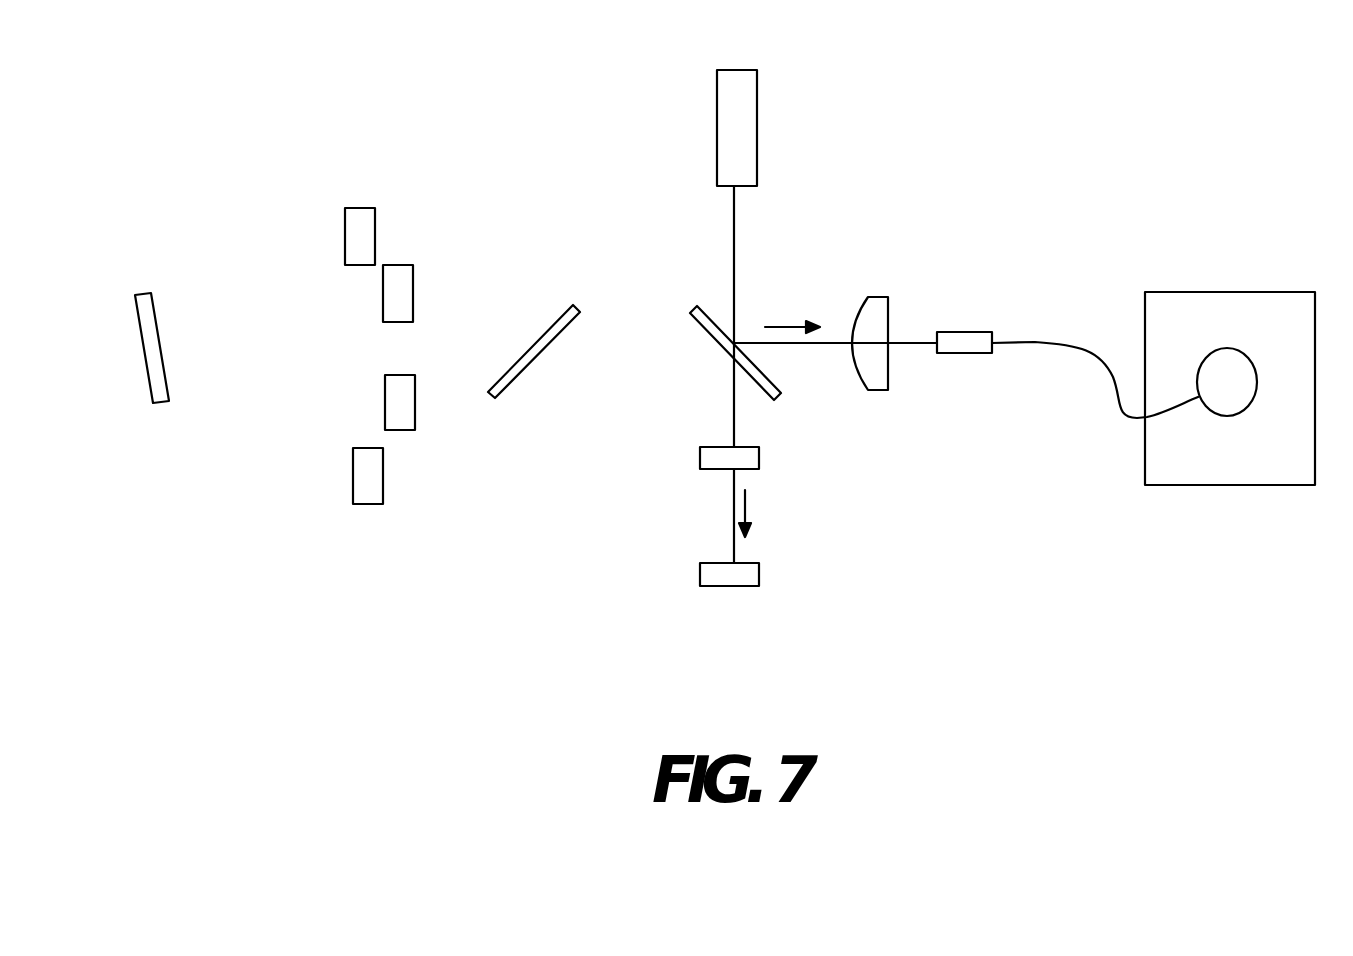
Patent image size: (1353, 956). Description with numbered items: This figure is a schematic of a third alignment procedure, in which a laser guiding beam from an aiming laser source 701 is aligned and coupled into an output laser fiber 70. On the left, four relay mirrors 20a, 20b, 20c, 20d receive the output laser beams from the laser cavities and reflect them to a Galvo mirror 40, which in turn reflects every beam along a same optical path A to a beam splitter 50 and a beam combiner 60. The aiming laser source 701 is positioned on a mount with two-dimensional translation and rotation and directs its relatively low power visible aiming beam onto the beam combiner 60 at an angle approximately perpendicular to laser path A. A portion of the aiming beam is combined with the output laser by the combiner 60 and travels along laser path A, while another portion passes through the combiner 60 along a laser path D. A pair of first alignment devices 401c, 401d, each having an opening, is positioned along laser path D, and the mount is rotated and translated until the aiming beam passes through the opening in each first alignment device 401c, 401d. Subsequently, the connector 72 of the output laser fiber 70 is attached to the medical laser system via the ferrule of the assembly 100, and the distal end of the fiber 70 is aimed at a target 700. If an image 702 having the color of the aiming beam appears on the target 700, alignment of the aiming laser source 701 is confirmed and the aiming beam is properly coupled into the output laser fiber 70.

The Galvo mirror 40 is at (160, 402).
The relay mirror 20a is at (362, 215).
The relay mirror 20b is at (398, 275).
The relay mirror 20c is at (407, 425).
The relay mirror 20d is at (365, 498).
The beam splitter 50 is at (528, 345).
The beam combiner 60 is at (705, 333).
The aiming laser source 701 is at (717, 123).
The first alignment device 401c is at (700, 458).
The first alignment device 401d is at (700, 573).
The assembly 100 is at (882, 390).
The connector 72 is at (980, 332).
The output laser fiber 70 is at (1037, 340).
The target 700 is at (1190, 292).
The image 702 is at (1227, 417).
The laser path A is at (840, 343).
The laser path D is at (734, 412).